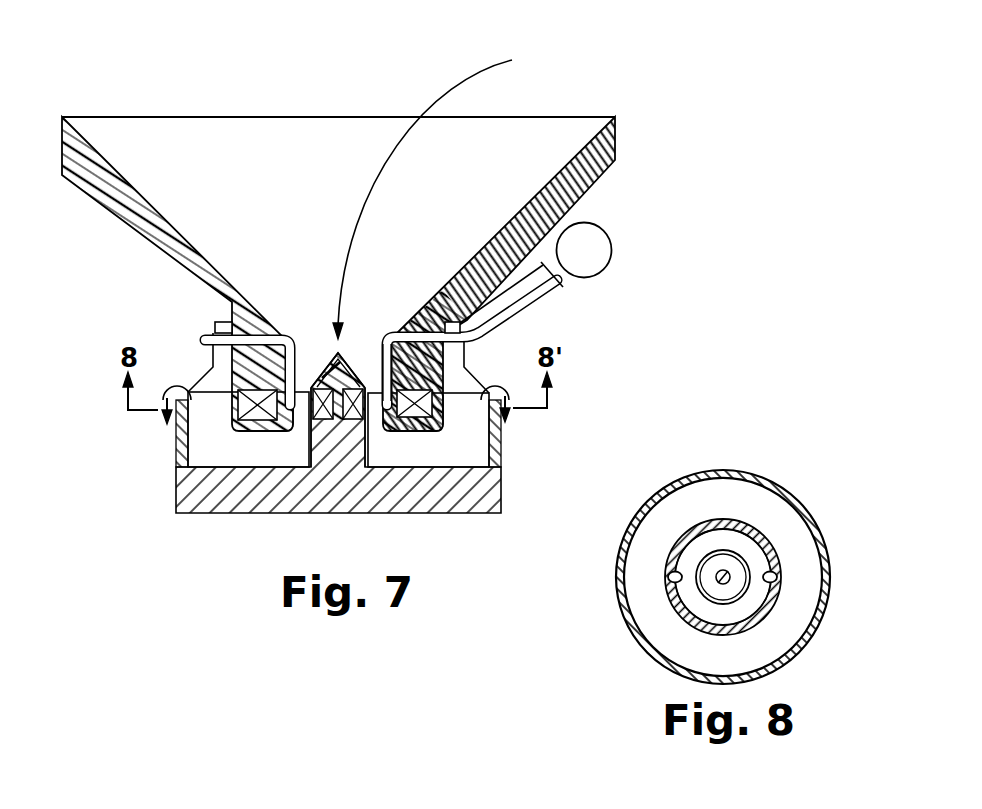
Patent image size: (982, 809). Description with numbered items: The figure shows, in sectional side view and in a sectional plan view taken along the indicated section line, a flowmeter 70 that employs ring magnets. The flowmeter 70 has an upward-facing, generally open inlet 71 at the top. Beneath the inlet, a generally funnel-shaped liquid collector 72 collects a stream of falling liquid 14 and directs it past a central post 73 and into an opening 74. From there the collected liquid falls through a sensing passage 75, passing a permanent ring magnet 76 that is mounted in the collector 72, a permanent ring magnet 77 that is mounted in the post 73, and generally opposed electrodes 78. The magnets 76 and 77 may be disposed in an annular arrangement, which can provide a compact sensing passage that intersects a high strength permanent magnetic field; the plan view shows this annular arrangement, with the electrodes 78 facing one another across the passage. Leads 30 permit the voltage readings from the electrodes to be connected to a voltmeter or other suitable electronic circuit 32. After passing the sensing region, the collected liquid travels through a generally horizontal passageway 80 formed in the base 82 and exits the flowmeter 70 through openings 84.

In FIG. 7, the flowmeter 70 is at (296, 76).
In FIG. 7, the inlet 71 is at (572, 116).
In FIG. 7, the stream of falling liquid 14 is at (452, 88).
In FIG. 7, the electronic circuit 32 is at (612, 250).
In FIG. 7, the leads 30 is at (537, 299).
In FIG. 7, the central post 73 is at (342, 353).
In FIG. 8, the central post 73 is at (743, 593).
In FIG. 7, the opening 74 is at (385, 343).
In FIG. 7, the permanent ring magnet 77 is at (322, 387).
In FIG. 8, the permanent ring magnet 77 is at (733, 560).
In FIG. 7, the openings 84 is at (207, 373).
In FIG. 7, the liquid collector 72 is at (423, 367).
In FIG. 8, the liquid collector 72 is at (645, 508).
In FIG. 7, the permanent ring magnet 76 is at (238, 410).
In FIG. 8, the permanent ring magnet 76 is at (635, 608).
In FIG. 7, the electrodes 78 is at (280, 420).
In FIG. 8, the electrodes 78 is at (685, 568).
In FIG. 7, the sensing passage 75 is at (300, 412).
In FIG. 8, the sensing passage 75 is at (697, 598).
In FIG. 7, the base 82 is at (335, 497).
In FIG. 7, the passageway 80 is at (500, 492).